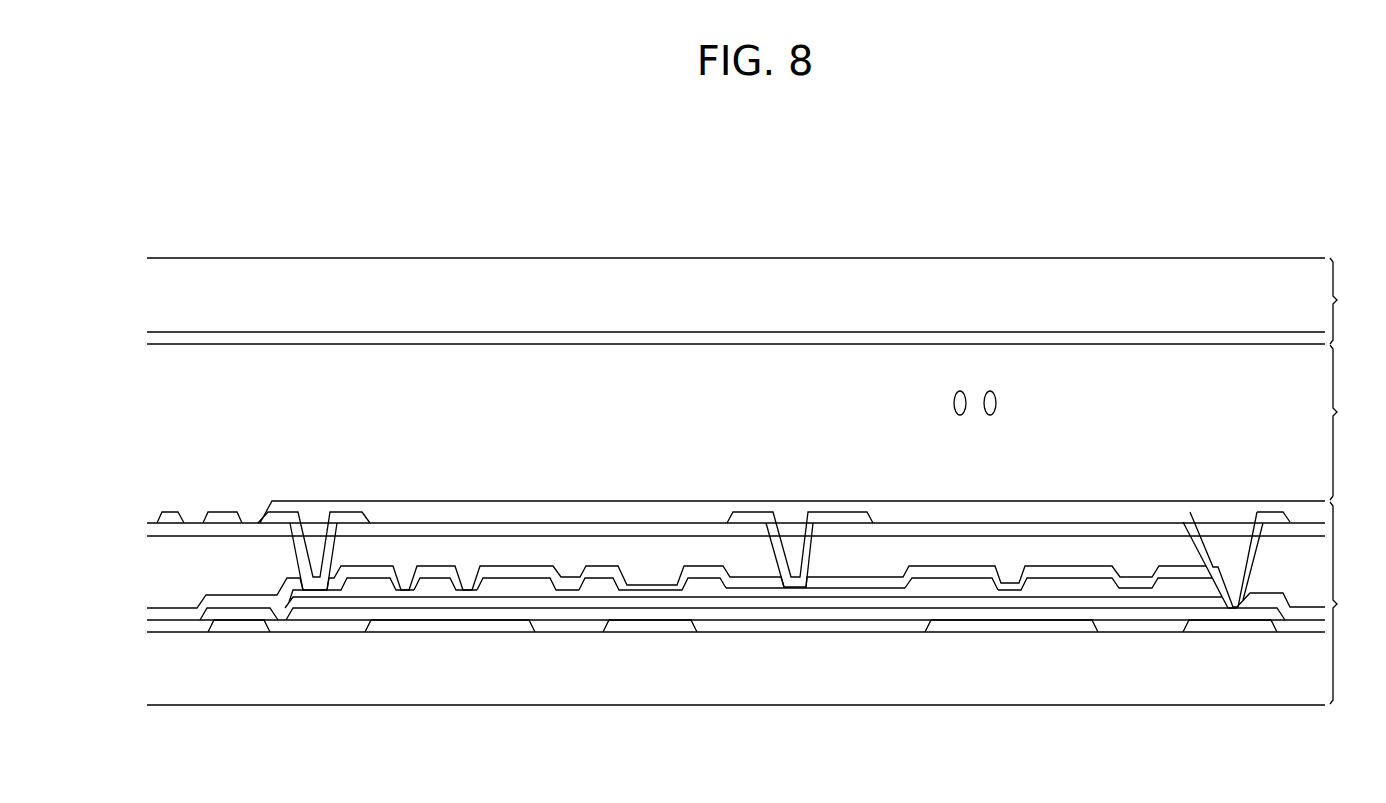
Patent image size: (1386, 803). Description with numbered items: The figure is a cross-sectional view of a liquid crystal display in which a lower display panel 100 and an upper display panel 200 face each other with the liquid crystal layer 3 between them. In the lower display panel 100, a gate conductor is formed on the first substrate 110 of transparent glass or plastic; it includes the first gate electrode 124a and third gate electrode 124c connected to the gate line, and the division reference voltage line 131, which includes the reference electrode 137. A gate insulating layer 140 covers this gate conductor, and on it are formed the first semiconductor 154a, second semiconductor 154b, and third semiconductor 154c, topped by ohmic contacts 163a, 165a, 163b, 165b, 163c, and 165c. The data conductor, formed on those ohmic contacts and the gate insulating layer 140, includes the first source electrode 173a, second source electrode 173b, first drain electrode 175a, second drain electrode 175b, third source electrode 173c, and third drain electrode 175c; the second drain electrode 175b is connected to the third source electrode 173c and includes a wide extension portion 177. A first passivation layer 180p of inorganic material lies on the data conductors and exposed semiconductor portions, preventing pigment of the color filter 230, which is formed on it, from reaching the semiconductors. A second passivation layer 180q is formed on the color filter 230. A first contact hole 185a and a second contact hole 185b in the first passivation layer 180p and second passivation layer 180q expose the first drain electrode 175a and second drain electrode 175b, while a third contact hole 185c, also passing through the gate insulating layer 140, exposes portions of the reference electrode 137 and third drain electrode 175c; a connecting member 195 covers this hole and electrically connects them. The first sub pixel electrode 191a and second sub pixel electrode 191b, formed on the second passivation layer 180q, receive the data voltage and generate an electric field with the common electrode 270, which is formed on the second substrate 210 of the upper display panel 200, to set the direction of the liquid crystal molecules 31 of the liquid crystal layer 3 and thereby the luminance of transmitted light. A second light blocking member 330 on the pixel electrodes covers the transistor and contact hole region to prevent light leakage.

The liquid crystal layer 3 is at (1344, 422).
The liquid crystal molecules 31 is at (997, 403).
The lower display panel 100 is at (1352, 603).
The first substrate 110 is at (908, 680).
The first gate electrode 124a is at (398, 626).
The third gate electrode 124c is at (990, 626).
The division reference voltage line 131 is at (236, 626).
The reference electrode 137 is at (1223, 623).
The gate insulating layer 140 is at (817, 625).
The first semiconductor 154a is at (384, 600).
The second semiconductor 154b is at (477, 598).
The third semiconductor 154c is at (668, 608).
The ohmic contact 163a is at (418, 597).
The ohmic contact 163b is at (444, 597).
The ohmic contact 163c is at (969, 587).
The ohmic contact 165a is at (295, 592).
The ohmic contact 165b is at (508, 597).
The ohmic contact 165c is at (1058, 588).
The first source electrode 173a is at (417, 575).
The second source electrode 173b is at (447, 577).
The third source electrode 173c is at (703, 586).
The first drain electrode 175a is at (333, 586).
The second drain electrode 175b is at (508, 578).
The third drain electrode 175c is at (1052, 583).
The wide extension portion 177 is at (846, 592).
The first passivation layer 180p is at (173, 607).
The second passivation layer 180q is at (619, 522).
The first contact hole 185a is at (303, 557).
The second contact hole 185b is at (782, 551).
The third contact hole 185c is at (1200, 553).
The first sub pixel electrode 191a is at (168, 515).
The second sub pixel electrode 191b is at (748, 515).
The connecting member 195 is at (1262, 515).
The upper display panel 200 is at (761, 301).
The second substrate 210 is at (830, 277).
The color filter 230 is at (568, 547).
The common electrode 270 is at (947, 337).
The second light blocking member 330 is at (880, 506).